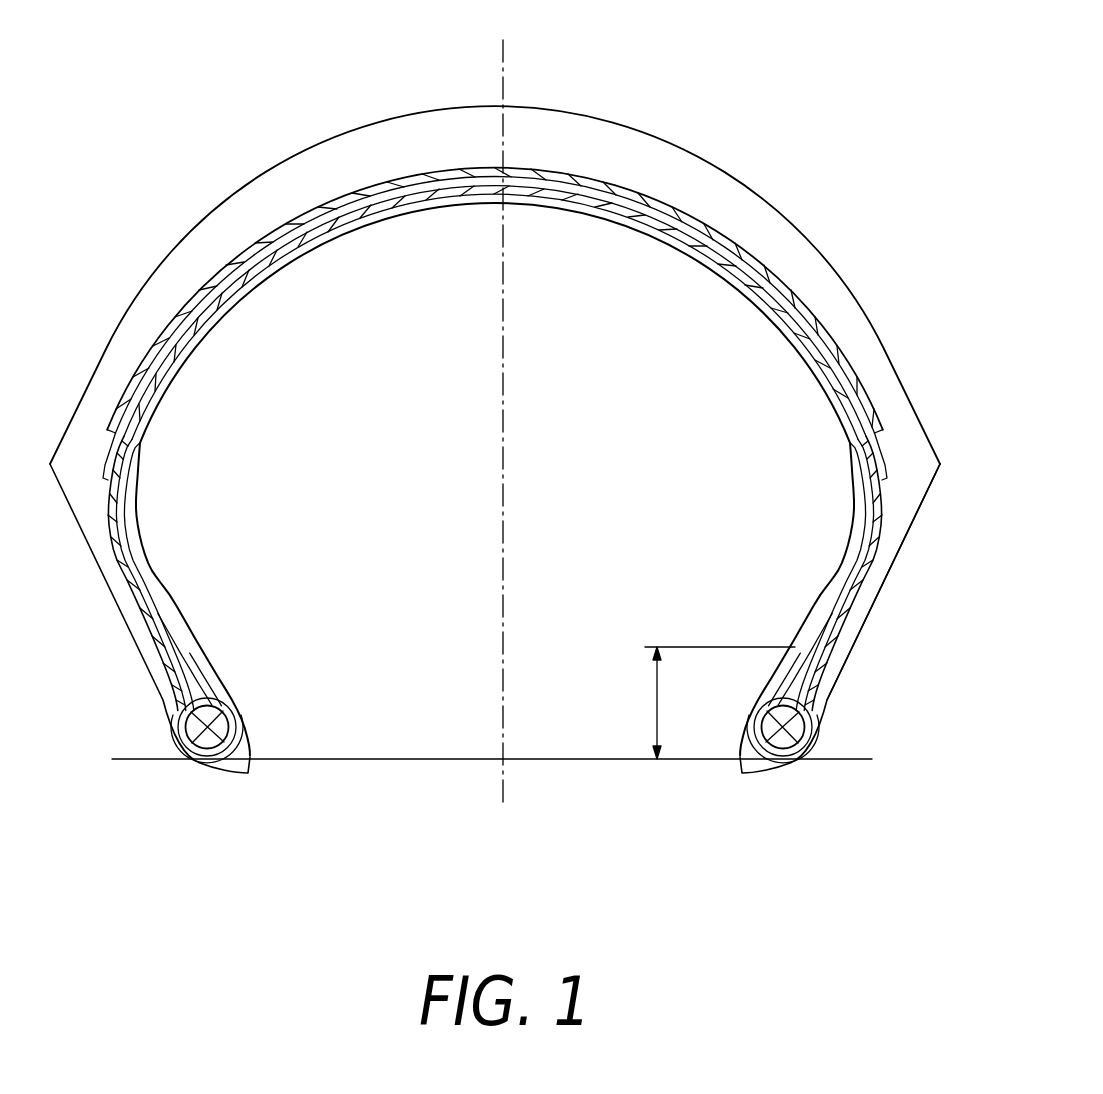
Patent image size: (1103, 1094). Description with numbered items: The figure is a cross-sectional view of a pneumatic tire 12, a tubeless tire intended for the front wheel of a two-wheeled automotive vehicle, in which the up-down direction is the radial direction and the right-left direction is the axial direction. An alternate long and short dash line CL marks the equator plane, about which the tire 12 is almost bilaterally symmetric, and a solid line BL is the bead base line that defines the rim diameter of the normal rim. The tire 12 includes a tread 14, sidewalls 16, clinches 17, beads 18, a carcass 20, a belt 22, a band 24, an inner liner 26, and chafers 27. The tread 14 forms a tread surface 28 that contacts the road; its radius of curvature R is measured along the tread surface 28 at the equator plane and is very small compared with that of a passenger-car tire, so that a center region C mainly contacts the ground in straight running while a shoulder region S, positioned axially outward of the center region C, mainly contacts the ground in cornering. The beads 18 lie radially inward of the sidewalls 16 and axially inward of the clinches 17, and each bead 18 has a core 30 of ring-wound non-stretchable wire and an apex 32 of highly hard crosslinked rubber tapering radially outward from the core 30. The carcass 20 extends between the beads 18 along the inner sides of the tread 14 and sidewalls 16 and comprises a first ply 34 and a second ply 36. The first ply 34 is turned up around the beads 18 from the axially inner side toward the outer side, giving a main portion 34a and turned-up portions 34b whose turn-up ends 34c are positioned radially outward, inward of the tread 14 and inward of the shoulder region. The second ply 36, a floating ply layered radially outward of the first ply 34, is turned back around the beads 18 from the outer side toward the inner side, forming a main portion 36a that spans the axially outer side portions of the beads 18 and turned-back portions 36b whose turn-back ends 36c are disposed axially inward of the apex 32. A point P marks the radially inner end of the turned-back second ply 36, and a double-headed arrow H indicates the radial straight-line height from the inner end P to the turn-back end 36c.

The pneumatic tire 12 is at (873, 34).
The tread 14 is at (541, 125).
The sidewall 16 is at (898, 540).
The clinch 17 is at (822, 740).
The bead 18 is at (905, 672).
The carcass 20 is at (535, 296).
The belt 22 is at (715, 248).
The band 24 is at (648, 194).
The inner liner 26 is at (737, 307).
The chafer 27 is at (758, 768).
The tread surface 28 is at (447, 109).
The core 30 is at (805, 719).
The apex 32 is at (803, 684).
The first ply 34 is at (562, 207).
The main portion 34a is at (850, 548).
The turned-up portion 34b is at (812, 628).
The turn-up end 34c is at (850, 428).
The second ply 36 is at (610, 203).
The main portion 36a is at (826, 655).
The turned-back portion 36b is at (790, 688).
The turn-back end 36c is at (797, 632).
The center region C is at (604, 104).
The shoulder region S is at (842, 246).
The radius of curvature R is at (416, 128).
The equator plane CL is at (503, 538).
The height H is at (712, 703).
The inner end P is at (783, 768).
The bead base line BL is at (548, 762).